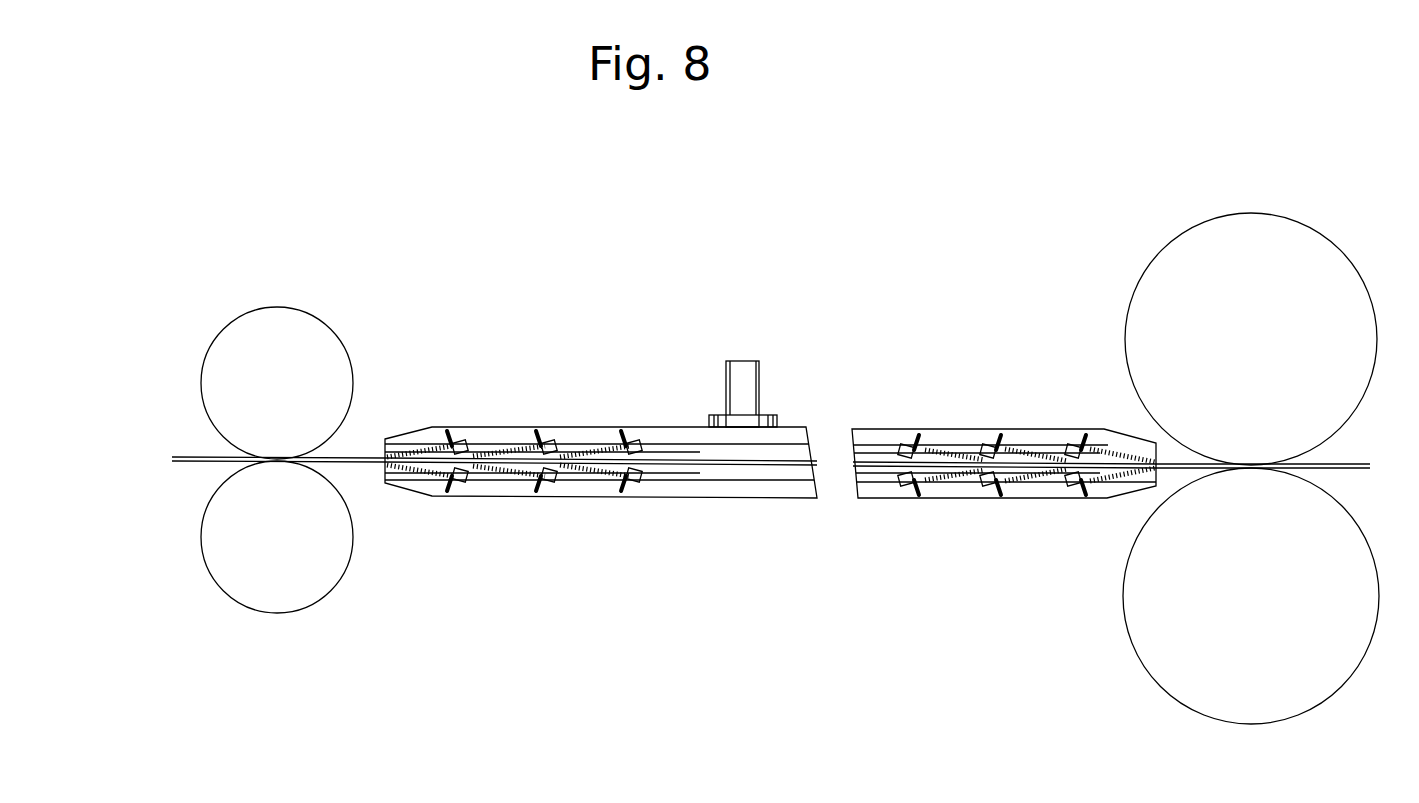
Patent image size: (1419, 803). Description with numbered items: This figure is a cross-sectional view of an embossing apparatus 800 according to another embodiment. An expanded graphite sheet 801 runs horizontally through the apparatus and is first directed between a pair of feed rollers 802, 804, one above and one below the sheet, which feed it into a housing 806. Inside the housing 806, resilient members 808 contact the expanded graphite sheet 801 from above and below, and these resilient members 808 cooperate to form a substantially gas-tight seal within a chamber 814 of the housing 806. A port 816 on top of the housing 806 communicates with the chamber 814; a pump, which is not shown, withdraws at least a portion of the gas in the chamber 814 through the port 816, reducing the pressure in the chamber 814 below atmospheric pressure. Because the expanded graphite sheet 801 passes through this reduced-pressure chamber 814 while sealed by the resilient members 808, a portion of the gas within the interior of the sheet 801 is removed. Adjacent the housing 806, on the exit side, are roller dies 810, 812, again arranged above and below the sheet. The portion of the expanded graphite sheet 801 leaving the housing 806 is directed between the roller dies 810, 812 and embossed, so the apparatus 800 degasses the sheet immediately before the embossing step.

The embossing apparatus 800 is at (579, 228).
The expanded graphite sheet 801 is at (205, 458).
The feed roller 802 is at (327, 325).
The feed roller 804 is at (320, 600).
The housing 806 is at (697, 497).
The resilient members 808 is at (427, 487).
The roller die 810 is at (1138, 286).
The roller die 812 is at (1138, 661).
The chamber 814 is at (697, 453).
The port 816 is at (745, 367).